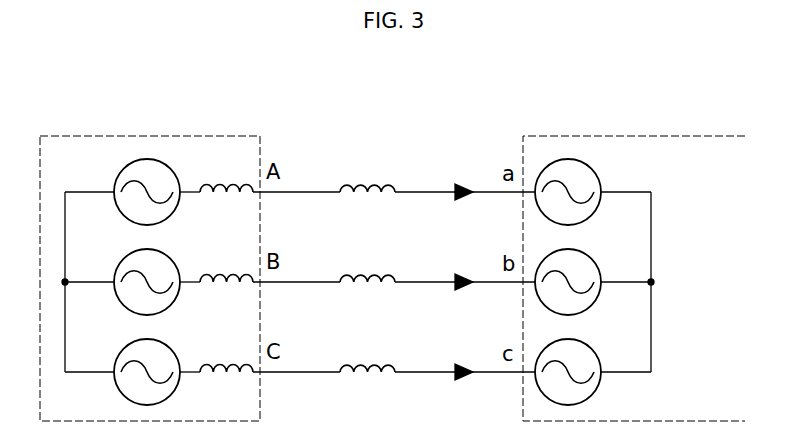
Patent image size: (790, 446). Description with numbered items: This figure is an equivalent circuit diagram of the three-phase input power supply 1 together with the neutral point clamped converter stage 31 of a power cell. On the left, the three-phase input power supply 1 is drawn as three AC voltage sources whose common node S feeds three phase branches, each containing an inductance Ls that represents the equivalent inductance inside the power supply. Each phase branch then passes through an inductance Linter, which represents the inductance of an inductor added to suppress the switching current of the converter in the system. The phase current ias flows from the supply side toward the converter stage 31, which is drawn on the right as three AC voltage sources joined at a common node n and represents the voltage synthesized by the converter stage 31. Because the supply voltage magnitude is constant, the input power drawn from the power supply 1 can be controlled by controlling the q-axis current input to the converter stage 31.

The three-phase input power supply 1 is at (161, 135).
The neutral point clamped converter stage 31 is at (612, 135).
The source neutral node S is at (52, 282).
The load neutral node n is at (660, 282).
The equivalent inductance inside the power supply Ls is at (226, 265).
The inductance of the added inductor Linter is at (367, 265).
The phase current ias is at (466, 269).